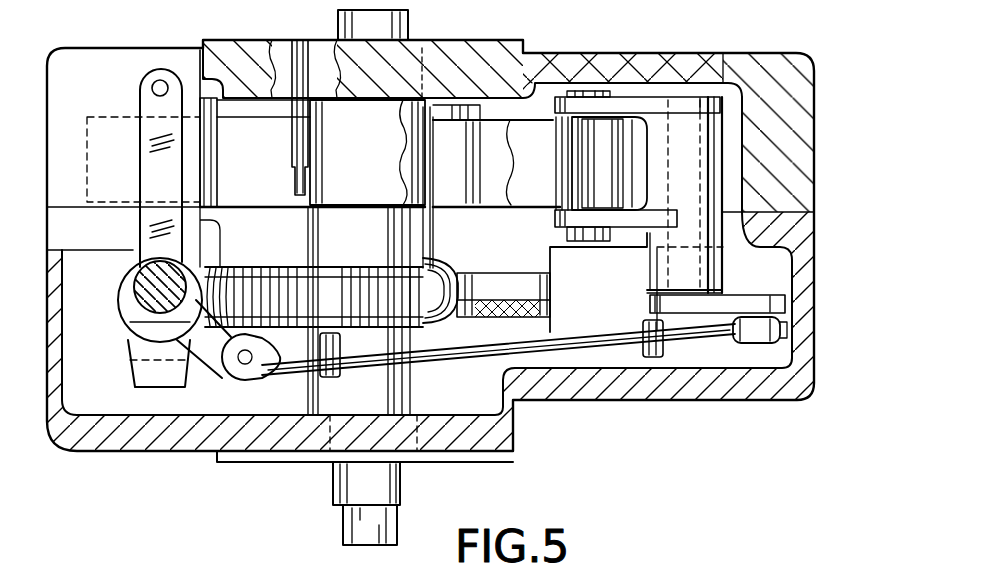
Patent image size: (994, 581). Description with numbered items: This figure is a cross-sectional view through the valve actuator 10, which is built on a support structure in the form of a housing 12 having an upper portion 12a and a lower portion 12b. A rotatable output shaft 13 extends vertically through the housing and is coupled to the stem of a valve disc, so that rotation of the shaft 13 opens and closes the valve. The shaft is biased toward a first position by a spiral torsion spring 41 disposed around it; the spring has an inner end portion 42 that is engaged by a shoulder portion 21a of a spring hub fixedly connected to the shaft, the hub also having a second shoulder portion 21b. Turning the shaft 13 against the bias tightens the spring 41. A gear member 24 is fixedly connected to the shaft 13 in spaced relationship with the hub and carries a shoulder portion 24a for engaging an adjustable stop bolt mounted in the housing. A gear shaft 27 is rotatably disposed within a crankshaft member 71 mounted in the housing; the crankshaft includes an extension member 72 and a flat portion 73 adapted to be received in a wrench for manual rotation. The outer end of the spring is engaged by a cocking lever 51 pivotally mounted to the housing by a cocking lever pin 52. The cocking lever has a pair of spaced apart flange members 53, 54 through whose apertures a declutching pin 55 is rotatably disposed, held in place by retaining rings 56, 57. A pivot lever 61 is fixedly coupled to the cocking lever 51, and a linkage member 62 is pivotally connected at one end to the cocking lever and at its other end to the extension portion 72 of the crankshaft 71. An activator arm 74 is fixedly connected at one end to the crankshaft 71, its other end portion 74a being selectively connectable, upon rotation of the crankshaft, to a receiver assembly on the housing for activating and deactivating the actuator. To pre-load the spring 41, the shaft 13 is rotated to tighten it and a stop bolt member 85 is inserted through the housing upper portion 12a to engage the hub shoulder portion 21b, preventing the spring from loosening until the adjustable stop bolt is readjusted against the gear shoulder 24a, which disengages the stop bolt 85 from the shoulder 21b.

The actuator 10 is at (840, 99).
The housing 12 is at (818, 216).
The upper portion of housing 12a is at (797, 172).
The lower portion of housing 12b is at (803, 342).
The rotatable output shaft 13 is at (405, 23).
The shoulder portion of hub 21a is at (447, 108).
The shoulder portion of hub 21b is at (300, 192).
The gear member 24 is at (287, 252).
The shoulder portion of gear 24a is at (448, 276).
The gear shaft 27 is at (137, 290).
The spiral torsion spring 41 is at (587, 92).
The inner end portion of spring 42 is at (540, 133).
The cocking lever 51 is at (712, 60).
The cocking lever pin 52 is at (718, 70).
The flange member 53 is at (652, 90).
The flange member 54 is at (630, 225).
The declutching pin 55 is at (558, 221).
The retaining ring 56 is at (628, 103).
The retaining ring 57 is at (608, 228).
The pivot lever 61 is at (773, 306).
The linkage member 62 is at (592, 356).
The crankshaft member 71 is at (133, 325).
The extension member 72 is at (215, 352).
The flat portion 73 is at (140, 317).
The activator arm 74 is at (147, 157).
The lever hole 74a is at (162, 82).
The stop bolt member 85 is at (300, 143).